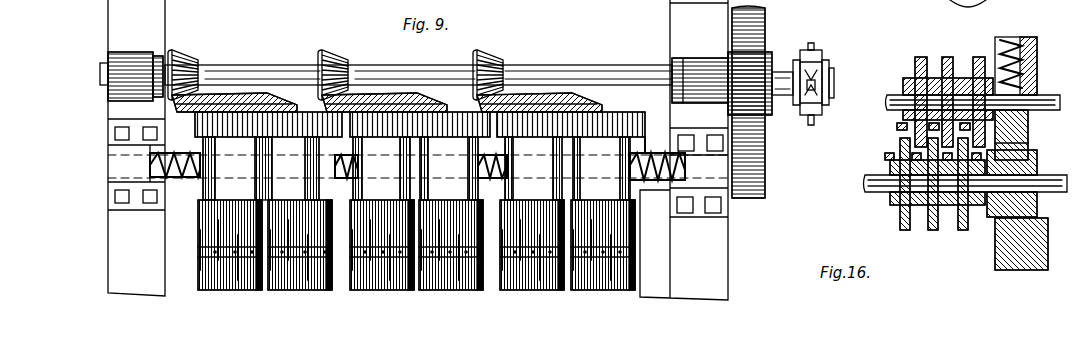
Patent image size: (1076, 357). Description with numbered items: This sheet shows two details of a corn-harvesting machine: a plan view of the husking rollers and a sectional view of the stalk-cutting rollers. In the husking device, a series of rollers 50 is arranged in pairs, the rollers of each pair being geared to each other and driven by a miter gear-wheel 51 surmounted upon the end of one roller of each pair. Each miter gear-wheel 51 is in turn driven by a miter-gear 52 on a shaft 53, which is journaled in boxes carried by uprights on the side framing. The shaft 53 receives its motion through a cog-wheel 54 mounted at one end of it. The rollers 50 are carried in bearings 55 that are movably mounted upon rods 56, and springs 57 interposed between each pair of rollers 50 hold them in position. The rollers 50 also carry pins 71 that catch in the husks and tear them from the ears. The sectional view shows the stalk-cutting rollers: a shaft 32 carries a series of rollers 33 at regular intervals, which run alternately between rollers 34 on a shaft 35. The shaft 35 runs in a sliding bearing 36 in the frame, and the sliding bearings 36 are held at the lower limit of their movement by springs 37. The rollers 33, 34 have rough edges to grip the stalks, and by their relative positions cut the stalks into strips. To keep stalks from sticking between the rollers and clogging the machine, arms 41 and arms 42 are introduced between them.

In FIG. 9, the rollers 50 is at (282, 225).
In FIG. 9, the miter gear-wheel 51 is at (233, 96).
In FIG. 9, the miter-gear 52 is at (182, 53).
In FIG. 9, the shaft 53 is at (283, 75).
In FIG. 9, the cog-wheel 54 is at (762, 30).
In FIG. 9, the bearings 55 is at (622, 170).
In FIG. 9, the rods 56 is at (652, 153).
In FIG. 9, the springs 57 is at (150, 166).
In FIG. 9, the pins 71 is at (465, 252).
In FIG. 16, the shaft 32 is at (1050, 178).
In FIG. 16, the rollers 33 is at (960, 228).
In FIG. 16, the rollers 34 is at (975, 60).
In FIG. 16, the shaft 35 is at (902, 95).
In FIG. 16, the sliding bearing 36 is at (1030, 136).
In FIG. 16, the springs 37 is at (1005, 80).
In FIG. 16, the arms 41 is at (897, 127).
In FIG. 16, the arms 42 is at (885, 157).